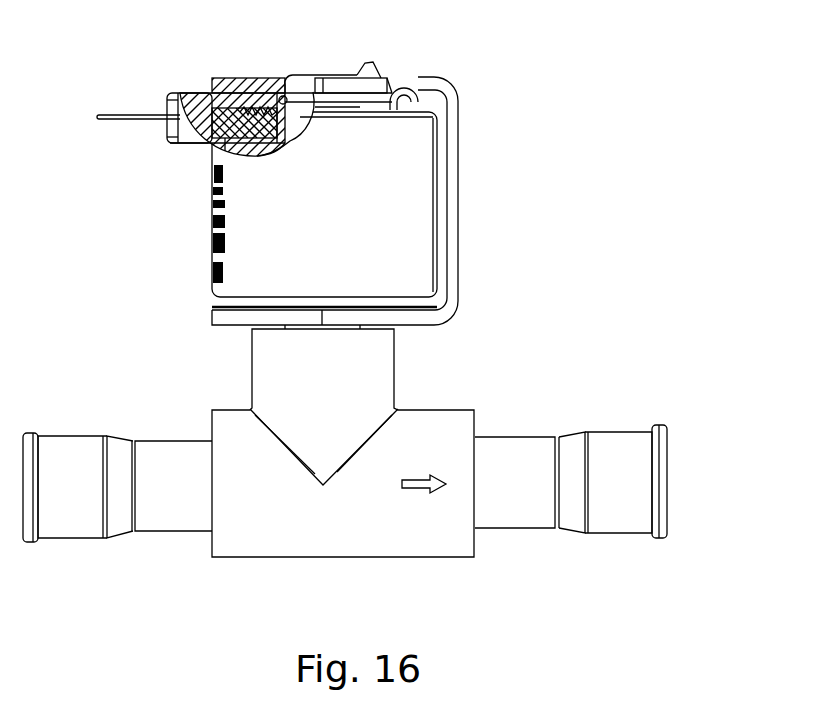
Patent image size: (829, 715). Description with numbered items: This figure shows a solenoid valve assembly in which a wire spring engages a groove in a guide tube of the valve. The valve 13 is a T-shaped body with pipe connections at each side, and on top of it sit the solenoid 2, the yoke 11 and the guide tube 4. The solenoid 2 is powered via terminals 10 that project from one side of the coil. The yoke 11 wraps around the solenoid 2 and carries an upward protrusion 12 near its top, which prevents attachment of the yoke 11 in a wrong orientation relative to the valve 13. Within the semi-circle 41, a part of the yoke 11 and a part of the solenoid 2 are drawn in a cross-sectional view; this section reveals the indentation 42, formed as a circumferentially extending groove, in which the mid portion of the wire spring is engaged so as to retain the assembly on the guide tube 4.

The solenoid 2 is at (263, 229).
The guide tube 4 is at (307, 77).
The terminals 10 is at (118, 113).
The yoke 11 is at (459, 175).
The upward protrusion 12 is at (375, 63).
The valve 13 is at (418, 544).
The semi-circle 41 is at (213, 143).
The indentation 42 is at (285, 78).